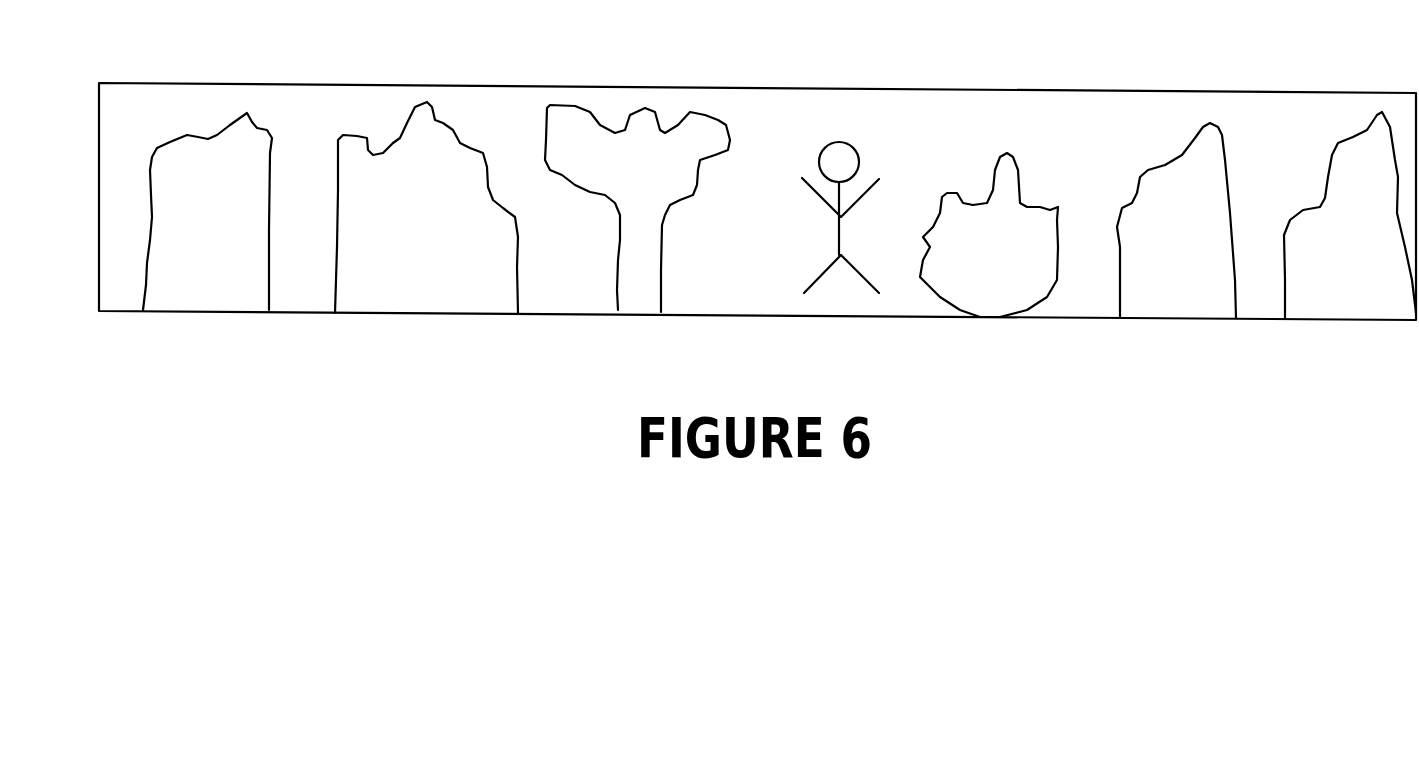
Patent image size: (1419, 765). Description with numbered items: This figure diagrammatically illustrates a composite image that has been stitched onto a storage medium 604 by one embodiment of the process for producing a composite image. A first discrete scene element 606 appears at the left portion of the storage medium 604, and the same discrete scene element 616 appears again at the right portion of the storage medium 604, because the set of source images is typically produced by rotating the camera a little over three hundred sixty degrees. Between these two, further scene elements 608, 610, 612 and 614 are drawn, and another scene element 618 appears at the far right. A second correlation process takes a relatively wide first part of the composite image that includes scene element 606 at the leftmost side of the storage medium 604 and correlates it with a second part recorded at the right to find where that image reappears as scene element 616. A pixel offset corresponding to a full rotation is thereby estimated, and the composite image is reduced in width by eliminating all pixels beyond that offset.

The storage medium 604 is at (138, 83).
The first discrete scene element 606 is at (150, 302).
The second object 608 is at (337, 298).
The tree-shaped object 610 is at (618, 302).
The stick figure person 612 is at (805, 287).
The bush-shaped object 614 is at (957, 287).
The discrete scene element 616 is at (1123, 292).
The mountain-shaped object 618 is at (1293, 290).